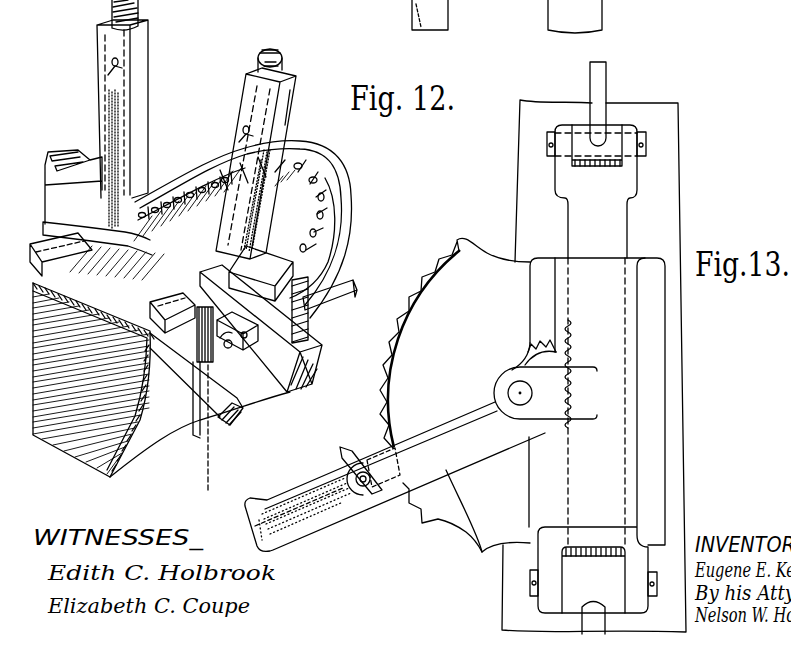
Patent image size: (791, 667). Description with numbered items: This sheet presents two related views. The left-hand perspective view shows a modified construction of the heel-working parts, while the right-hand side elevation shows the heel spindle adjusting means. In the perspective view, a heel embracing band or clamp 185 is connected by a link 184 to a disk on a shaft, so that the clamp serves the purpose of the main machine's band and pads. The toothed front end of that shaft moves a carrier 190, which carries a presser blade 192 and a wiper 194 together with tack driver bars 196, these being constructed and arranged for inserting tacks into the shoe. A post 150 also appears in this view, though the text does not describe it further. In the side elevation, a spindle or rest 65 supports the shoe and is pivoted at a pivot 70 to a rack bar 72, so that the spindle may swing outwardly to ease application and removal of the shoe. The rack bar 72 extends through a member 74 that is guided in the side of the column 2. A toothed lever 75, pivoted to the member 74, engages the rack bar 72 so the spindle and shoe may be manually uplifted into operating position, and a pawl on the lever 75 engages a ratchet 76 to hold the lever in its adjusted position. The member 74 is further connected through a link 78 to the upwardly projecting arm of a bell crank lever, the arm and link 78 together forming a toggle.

In FIG. 12, the post 150 is at (123, 143).
In FIG. 12, the heel embracing band or clamp 185 is at (343, 182).
In FIG. 12, the tack driver bars 196 is at (281, 63).
In FIG. 12, the carrier 190 is at (300, 262).
In FIG. 12, the link 184 is at (347, 285).
In FIG. 12, the wiper 194 is at (307, 342).
In FIG. 12, the presser blade 192 is at (247, 408).
In FIG. 13, the column 2 is at (673, 170).
In FIG. 13, the spindle or rest 65 is at (605, 75).
In FIG. 13, the pivot 70 is at (646, 136).
In FIG. 13, the rack bar 72 is at (618, 217).
In FIG. 13, the member 74 is at (655, 410).
In FIG. 13, the ratchet 76 is at (420, 510).
In FIG. 13, the toothed lever 75 is at (323, 527).
In FIG. 13, the link 78 is at (580, 622).